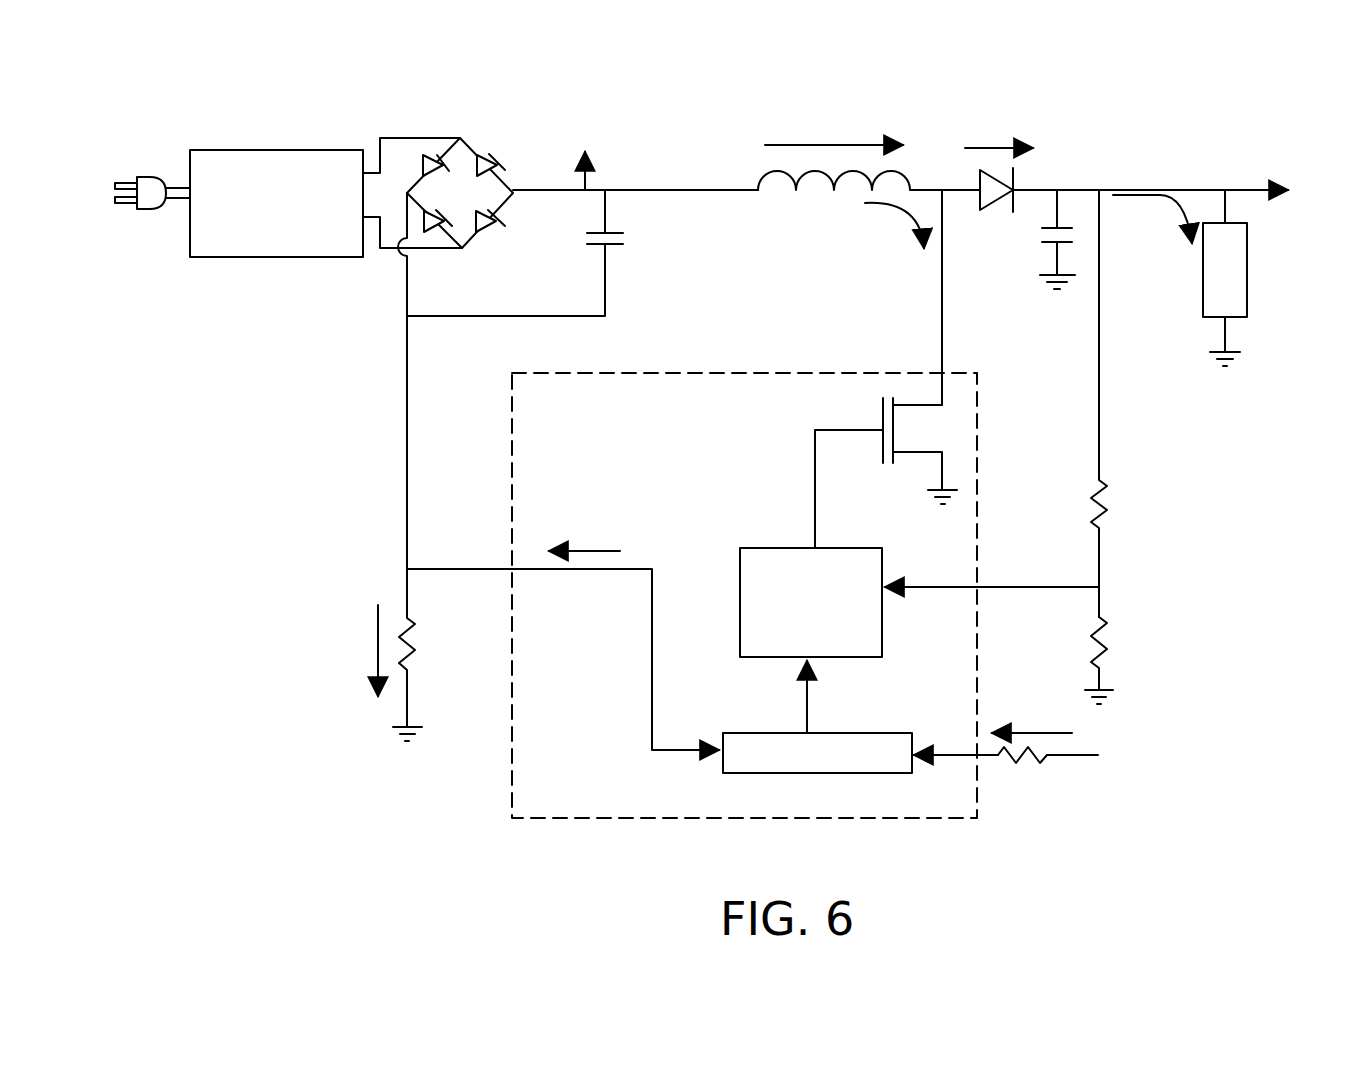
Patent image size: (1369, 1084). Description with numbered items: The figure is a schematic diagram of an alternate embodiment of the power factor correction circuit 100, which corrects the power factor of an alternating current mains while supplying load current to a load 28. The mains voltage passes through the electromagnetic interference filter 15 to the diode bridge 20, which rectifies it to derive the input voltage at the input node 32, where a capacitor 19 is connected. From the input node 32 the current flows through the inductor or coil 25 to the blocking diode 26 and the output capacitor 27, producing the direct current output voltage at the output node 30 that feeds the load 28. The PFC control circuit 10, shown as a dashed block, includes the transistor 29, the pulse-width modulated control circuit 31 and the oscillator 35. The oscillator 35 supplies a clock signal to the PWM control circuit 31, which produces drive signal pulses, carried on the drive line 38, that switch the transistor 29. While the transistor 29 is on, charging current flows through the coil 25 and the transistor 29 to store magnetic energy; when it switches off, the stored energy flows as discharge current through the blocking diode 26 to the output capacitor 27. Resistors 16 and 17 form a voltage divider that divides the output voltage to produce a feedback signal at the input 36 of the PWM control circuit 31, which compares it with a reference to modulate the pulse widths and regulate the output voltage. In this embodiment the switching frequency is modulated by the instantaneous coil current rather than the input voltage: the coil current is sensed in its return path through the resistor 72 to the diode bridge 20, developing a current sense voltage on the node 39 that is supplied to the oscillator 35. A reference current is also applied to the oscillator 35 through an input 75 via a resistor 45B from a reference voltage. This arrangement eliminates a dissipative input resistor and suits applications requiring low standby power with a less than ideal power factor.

The power factor correction circuit 100 is at (336, 798).
The electromagnetic interference filter 15 is at (222, 257).
The diode bridge 20 is at (478, 245).
The capacitor 19 is at (600, 246).
The input node 32 is at (658, 190).
The inductor or coil 25 is at (813, 187).
The blocking diode 26 is at (978, 207).
The output capacitor 27 is at (1035, 232).
The output node 30 is at (1086, 190).
The load 28 is at (1247, 255).
The resistor 16 is at (1107, 490).
The resistor 17 is at (1107, 630).
The input 36 is at (1055, 590).
The PFC control circuit 10 is at (512, 745).
The transistor 29 is at (890, 466).
The drive signal line 38 is at (813, 475).
The pulse-width modulated control circuit 31 is at (745, 548).
The oscillator 35 is at (735, 773).
The node 39 is at (480, 568).
The resistor 72 is at (422, 640).
The reference current input 75 is at (950, 757).
The reference resistor 45B is at (1030, 762).